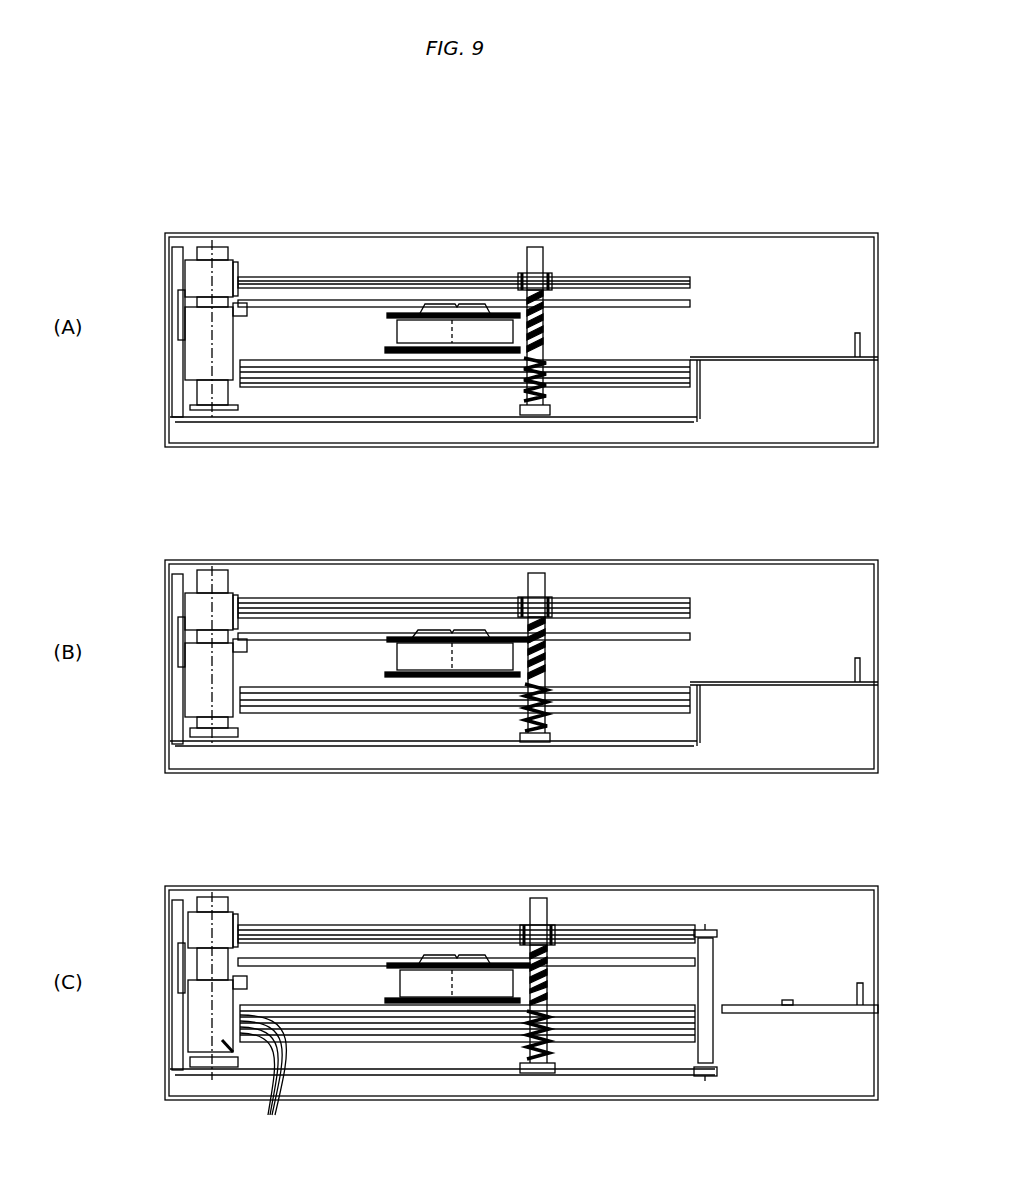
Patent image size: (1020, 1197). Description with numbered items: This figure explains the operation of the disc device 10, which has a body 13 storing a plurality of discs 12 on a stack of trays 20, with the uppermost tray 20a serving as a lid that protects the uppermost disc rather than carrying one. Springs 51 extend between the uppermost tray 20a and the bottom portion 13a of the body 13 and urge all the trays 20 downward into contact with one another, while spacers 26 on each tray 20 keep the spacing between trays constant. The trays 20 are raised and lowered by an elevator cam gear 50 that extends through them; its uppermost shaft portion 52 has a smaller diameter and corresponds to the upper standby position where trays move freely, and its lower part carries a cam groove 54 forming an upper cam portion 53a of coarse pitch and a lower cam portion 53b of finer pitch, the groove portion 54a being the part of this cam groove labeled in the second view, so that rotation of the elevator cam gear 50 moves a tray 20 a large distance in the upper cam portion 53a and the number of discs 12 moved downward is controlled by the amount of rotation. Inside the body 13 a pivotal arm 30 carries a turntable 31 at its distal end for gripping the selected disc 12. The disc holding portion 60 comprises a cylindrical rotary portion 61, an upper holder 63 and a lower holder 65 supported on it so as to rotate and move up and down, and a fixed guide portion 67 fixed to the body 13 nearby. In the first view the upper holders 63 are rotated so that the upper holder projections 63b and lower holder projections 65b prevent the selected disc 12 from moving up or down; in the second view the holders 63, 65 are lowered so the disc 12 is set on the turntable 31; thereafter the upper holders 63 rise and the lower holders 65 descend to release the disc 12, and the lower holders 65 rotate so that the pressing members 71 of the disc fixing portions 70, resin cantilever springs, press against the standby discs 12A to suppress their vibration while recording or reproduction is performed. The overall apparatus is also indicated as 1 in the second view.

The apparatus 1 is at (350, 724).
The disc device 10 is at (179, 218).
The disc 12 is at (692, 303).
The standby disc 12A is at (300, 362).
The body 13 is at (370, 418).
The bottom portion 13a is at (655, 1068).
The tray 20 is at (692, 288).
The uppermost tray 20a is at (667, 277).
The spacer 26 is at (520, 283).
The pivotal arm 30 is at (382, 338).
The turntable 31 is at (445, 303).
The elevator cam gear 50 is at (558, 252).
The spring 51 is at (712, 965).
The shaft portion 52 is at (535, 250).
The upper cam portion 53a is at (562, 318).
The lower cam portion 53b is at (558, 399).
The cam groove 54 is at (552, 326).
The threaded shaft portion 54a is at (553, 648).
The disc holding portion 60 is at (221, 228).
The rotary portion 61 is at (225, 251).
The upper holder 63 is at (195, 278).
The upper holder projection 63b is at (237, 264).
The lower holder 65 is at (222, 342).
The lower holder projection 65b is at (248, 314).
The fixed guide portion 67 is at (176, 360).
The disc fixing portion 70 is at (226, 1040).
The pressing member 71 is at (271, 1082).